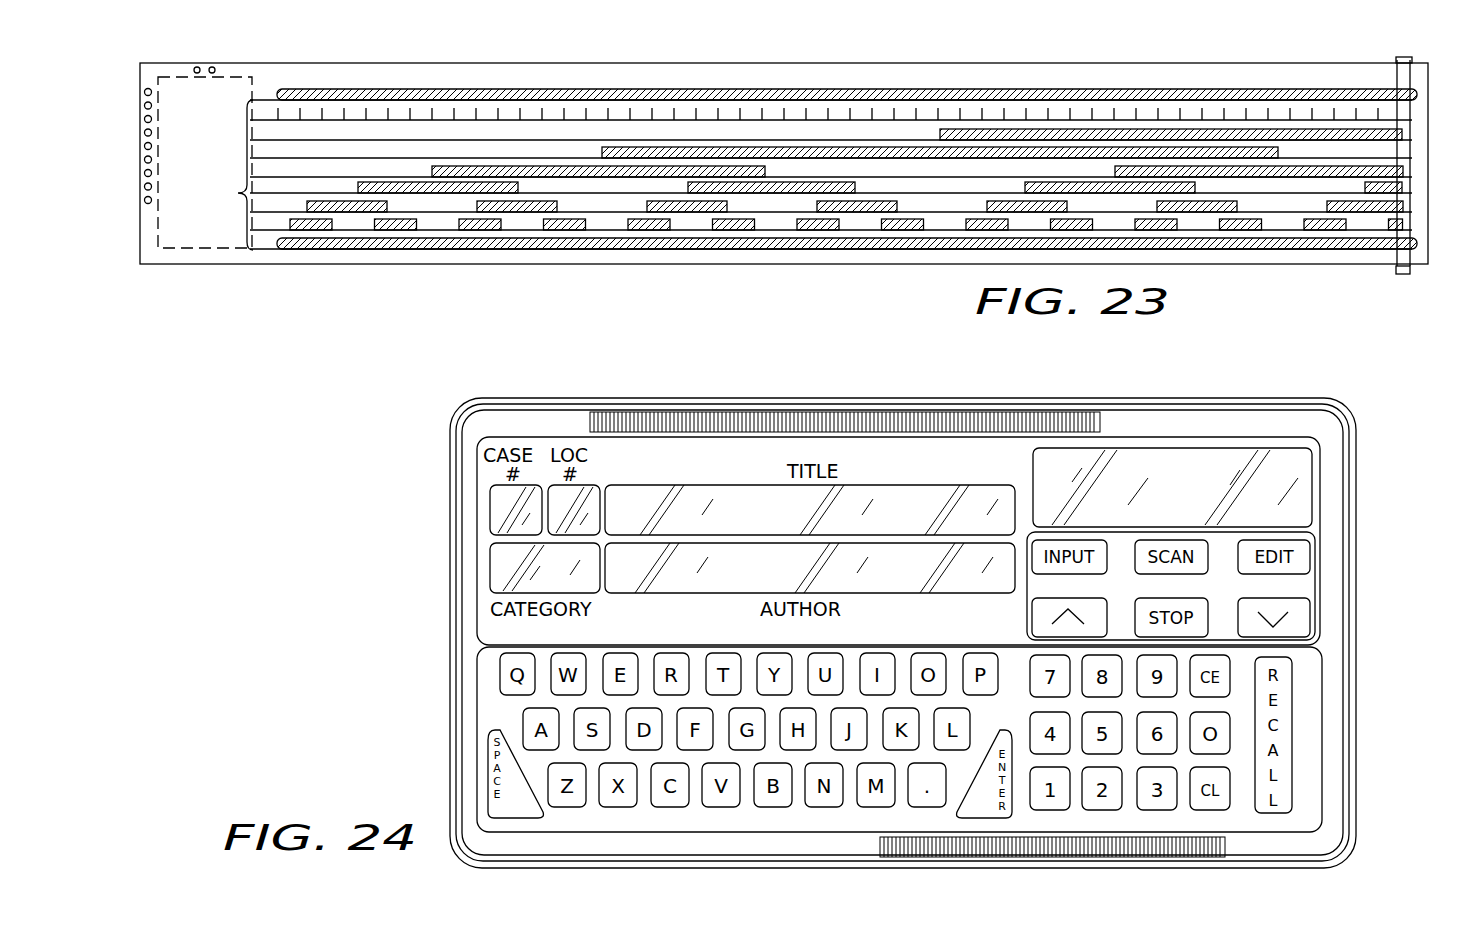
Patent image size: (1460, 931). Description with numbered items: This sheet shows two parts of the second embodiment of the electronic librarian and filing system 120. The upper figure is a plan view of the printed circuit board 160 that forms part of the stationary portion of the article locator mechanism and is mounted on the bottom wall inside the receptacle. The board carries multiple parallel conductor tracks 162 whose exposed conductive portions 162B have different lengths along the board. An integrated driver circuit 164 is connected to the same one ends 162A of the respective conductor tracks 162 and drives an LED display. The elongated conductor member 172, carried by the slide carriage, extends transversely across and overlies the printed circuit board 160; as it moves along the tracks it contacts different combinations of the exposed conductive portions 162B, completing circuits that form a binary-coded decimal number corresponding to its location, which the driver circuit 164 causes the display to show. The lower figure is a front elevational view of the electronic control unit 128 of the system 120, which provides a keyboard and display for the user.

In FIG. 24, the electronic librarian and filing system 120 is at (1371, 418).
In FIG. 24, the electronic control unit 128 is at (1359, 537).
In FIG. 23, the printed circuit board 160 is at (1155, 78).
In FIG. 23, the conductor tracks 162 is at (608, 265).
In FIG. 23, the one ends of the conductor tracks 162A is at (236, 194).
In FIG. 23, the exposed conductive portions 162B is at (1000, 128).
In FIG. 23, the integrated driver circuit 164 is at (217, 170).
In FIG. 23, the conductor member 172 is at (1398, 58).